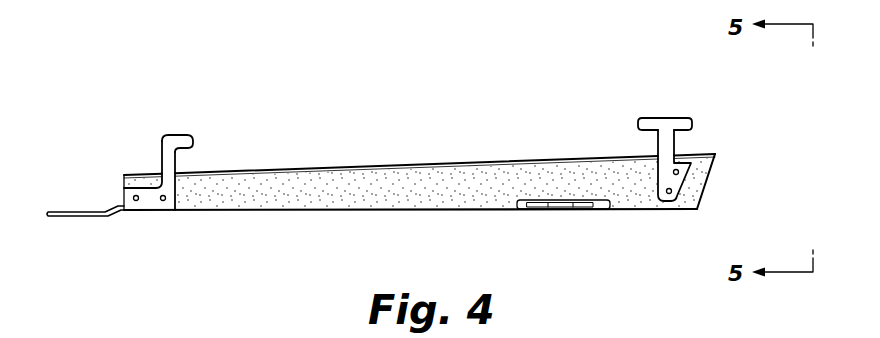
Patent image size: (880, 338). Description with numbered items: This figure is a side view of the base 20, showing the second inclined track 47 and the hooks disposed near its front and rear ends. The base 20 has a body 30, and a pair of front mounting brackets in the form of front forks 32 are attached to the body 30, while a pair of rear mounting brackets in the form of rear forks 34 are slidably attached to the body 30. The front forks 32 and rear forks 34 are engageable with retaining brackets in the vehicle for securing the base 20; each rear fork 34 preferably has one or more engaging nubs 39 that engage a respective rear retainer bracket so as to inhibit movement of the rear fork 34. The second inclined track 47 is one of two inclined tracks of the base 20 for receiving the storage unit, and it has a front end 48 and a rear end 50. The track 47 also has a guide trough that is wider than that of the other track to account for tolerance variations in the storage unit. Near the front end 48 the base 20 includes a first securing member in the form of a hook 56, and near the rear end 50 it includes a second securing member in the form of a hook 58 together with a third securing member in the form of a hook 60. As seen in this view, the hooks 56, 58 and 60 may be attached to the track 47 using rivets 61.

The base 20 is at (289, 211).
The body 30 is at (360, 211).
The front forks 32 is at (77, 218).
The rear forks 34 is at (533, 209).
The engaging nubs 39 is at (554, 209).
The second inclined track 47 is at (592, 159).
The front end 48 is at (123, 188).
The rear end 50 is at (713, 170).
The hooks 56 is at (178, 134).
The hooks 58 is at (648, 117).
The hooks 60 is at (697, 128).
The rivets 61 is at (163, 202).